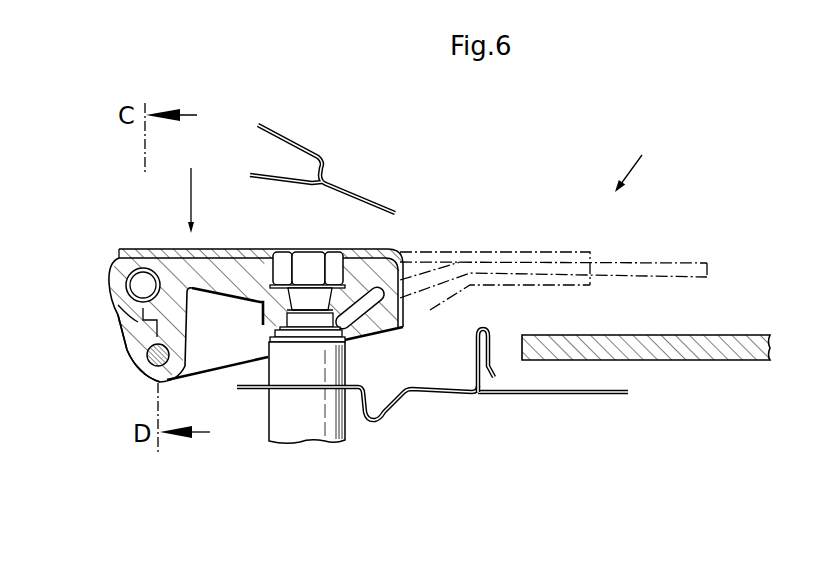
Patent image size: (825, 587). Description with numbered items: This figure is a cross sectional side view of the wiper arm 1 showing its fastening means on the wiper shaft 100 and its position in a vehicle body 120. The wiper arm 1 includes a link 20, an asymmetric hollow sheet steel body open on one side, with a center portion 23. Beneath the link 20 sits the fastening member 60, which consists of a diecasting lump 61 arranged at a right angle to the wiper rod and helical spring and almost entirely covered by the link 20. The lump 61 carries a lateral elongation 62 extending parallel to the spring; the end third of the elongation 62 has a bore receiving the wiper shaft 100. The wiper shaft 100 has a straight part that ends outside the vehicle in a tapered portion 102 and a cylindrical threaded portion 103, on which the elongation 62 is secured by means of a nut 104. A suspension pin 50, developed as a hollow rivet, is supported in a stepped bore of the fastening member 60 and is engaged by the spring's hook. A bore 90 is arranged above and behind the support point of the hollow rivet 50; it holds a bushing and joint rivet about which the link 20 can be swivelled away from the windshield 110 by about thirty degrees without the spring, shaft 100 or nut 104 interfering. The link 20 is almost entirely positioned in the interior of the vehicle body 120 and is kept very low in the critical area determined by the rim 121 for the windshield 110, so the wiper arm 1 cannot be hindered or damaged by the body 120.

The wiper arm 1 is at (632, 162).
The link 20 is at (191, 190).
The center portion 23 is at (162, 249).
The suspension pin 50 is at (173, 367).
The fastening member 60 is at (90, 285).
The diecasting lump 61 is at (150, 337).
The lateral elongation 62 is at (403, 273).
The bore 90 is at (137, 283).
The wiper shaft 100 is at (346, 440).
The tapered portion 102 is at (393, 251).
The cylindrical threaded portion 103 is at (305, 265).
The nut 104 is at (280, 262).
The windshield 110 is at (683, 350).
The vehicle body 120 is at (318, 152).
The rim 121 is at (473, 337).